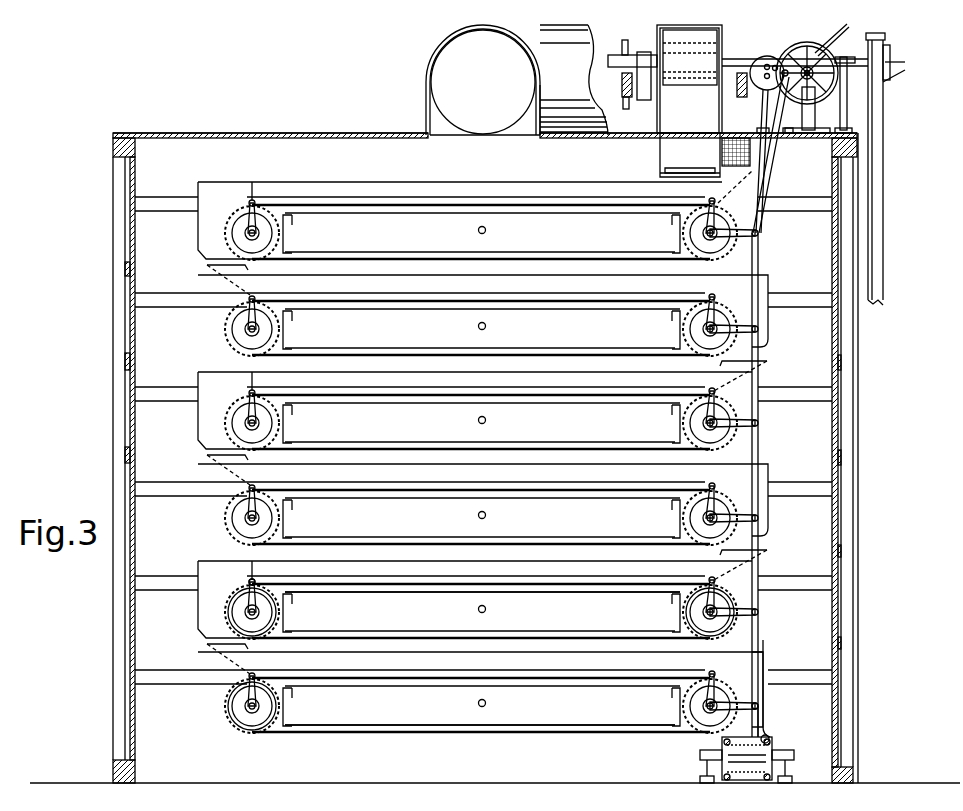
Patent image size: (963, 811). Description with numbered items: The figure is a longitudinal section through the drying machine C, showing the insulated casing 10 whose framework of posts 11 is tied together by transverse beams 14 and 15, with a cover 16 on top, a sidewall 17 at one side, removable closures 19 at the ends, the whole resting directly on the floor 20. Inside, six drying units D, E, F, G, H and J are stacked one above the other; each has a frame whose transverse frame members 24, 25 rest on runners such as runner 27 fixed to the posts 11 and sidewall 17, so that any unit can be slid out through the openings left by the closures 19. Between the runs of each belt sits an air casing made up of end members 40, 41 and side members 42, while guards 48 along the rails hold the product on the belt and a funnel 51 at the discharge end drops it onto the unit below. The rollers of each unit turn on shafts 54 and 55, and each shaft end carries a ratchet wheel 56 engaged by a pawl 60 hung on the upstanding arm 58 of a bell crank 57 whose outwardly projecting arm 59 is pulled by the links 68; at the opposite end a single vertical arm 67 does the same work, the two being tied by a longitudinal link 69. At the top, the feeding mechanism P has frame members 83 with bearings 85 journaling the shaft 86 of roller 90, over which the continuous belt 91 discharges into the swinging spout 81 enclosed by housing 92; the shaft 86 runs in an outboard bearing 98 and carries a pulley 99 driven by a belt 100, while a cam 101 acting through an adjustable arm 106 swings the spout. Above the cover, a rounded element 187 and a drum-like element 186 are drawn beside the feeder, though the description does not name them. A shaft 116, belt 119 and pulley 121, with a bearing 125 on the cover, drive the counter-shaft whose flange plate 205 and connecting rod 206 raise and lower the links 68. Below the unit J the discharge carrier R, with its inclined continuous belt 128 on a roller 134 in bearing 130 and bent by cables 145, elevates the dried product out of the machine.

The casing 10 is at (133, 185).
The posts 11 is at (118, 300).
The transverse beams 14 is at (125, 142).
The transverse beams 15 is at (117, 770).
The cover 16 is at (192, 133).
The sidewall 17 is at (143, 237).
The removable closures 19 is at (130, 455).
The floor 20 is at (575, 783).
The transverse frame member 24 is at (670, 600).
The transverse frame member 25 is at (293, 598).
The runner 27 is at (167, 585).
The end member 40 is at (673, 622).
The end member 41 is at (302, 640).
The side member 42 is at (345, 648).
The guards 48 is at (522, 548).
The funnel 51 is at (200, 590).
The shaft 54 is at (258, 605).
The shaft 55 is at (706, 628).
The ratchet wheel 56 is at (215, 600).
The bell crank 57 is at (702, 632).
The upstanding arm 58 is at (700, 585).
The outwardly projecting arm 59 is at (758, 632).
The pawl 60 is at (238, 584).
The vertical arm 67 is at (212, 612).
The links 68 is at (745, 600).
The longitudinal link 69 is at (605, 578).
The swinging spout 81 is at (657, 176).
The longitudinal frame members 83 is at (612, 72).
The bearings 85 is at (612, 62).
The shaft 86 is at (804, 46).
The roller 90 is at (706, 70).
The continuous belt 91 is at (703, 101).
The housing 92 is at (590, 140).
The outboard bearing 98 is at (905, 120).
The pulley 99 is at (886, 35).
The belt 100 is at (880, 250).
The cam 101 is at (625, 40).
The adjustable arm 106 is at (553, 50).
The shaft 116 is at (828, 57).
The belt 119 is at (890, 76).
The pulley 121 is at (843, 88).
The bearing 125 is at (812, 112).
The inclined continuous belt 128 is at (815, 712).
The bearing 130 is at (790, 778).
The roller 134 is at (763, 757).
The ropes or cables 145 is at (775, 738).
The drum 186 is at (440, 82).
The hood 187 is at (446, 58).
The flange plate 205 is at (770, 88).
The connecting rod 206 is at (770, 175).
The drying machine C is at (308, 140).
The drying unit D is at (385, 215).
The drying unit E is at (410, 322).
The drying unit F is at (410, 416).
The drying unit G is at (410, 515).
The drying unit H is at (414, 593).
The drying unit J is at (420, 707).
The feeding mechanism P is at (640, 135).
The discharge carrier R is at (755, 716).